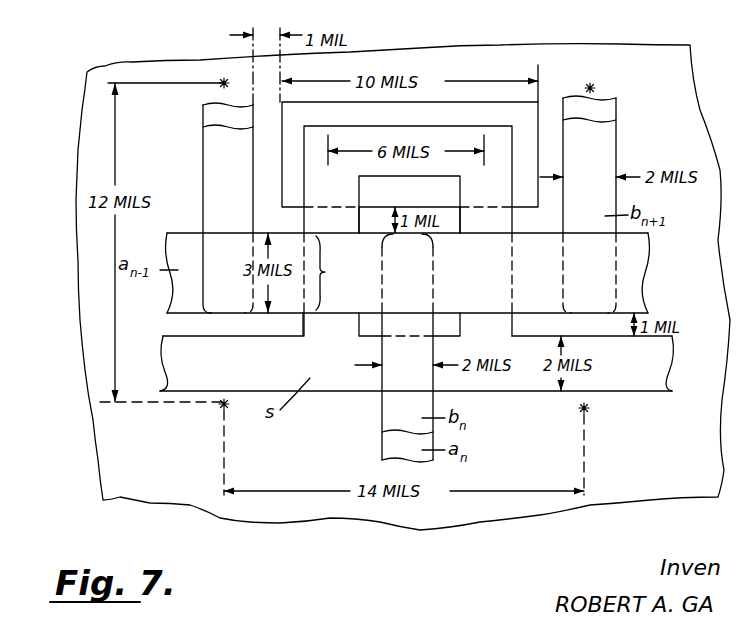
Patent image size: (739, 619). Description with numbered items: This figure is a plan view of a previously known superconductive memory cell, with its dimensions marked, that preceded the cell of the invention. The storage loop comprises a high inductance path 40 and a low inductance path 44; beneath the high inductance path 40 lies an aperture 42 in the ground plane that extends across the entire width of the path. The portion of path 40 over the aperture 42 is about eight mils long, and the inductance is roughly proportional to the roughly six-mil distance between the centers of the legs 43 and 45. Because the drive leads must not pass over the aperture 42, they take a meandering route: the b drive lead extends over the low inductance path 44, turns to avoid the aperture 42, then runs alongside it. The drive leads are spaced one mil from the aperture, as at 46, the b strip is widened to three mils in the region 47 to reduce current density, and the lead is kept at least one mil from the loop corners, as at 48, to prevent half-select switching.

The high inductance path 40 is at (484, 136).
The aperture in the ground plane 42 is at (540, 118).
The leg 43 is at (487, 200).
The low inductance path 44 is at (445, 352).
The leg 45 is at (351, 216).
The one mil spacing from the aperture 46 is at (345, 230).
The widened region of drive strip 47 is at (336, 273).
The spacing from loop corner 48 is at (300, 328).